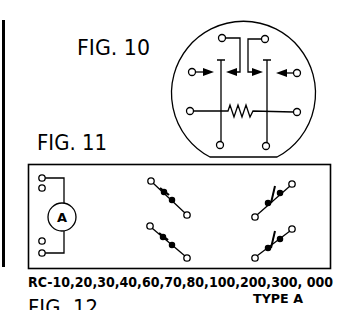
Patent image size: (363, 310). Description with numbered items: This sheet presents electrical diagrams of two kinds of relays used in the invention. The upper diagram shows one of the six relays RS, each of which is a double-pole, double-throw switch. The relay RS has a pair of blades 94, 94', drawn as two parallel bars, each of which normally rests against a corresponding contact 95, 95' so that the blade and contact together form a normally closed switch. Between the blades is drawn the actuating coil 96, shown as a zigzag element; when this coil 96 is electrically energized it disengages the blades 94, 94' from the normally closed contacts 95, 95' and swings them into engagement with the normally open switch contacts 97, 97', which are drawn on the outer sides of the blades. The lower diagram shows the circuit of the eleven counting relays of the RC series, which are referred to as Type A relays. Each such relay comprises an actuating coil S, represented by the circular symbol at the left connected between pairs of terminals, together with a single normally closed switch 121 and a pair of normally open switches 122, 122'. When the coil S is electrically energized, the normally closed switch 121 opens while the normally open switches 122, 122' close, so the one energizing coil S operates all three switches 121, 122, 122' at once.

In FIG. 10, the relay RS is at (161, 86).
In FIG. 10, the blade 94 is at (205, 101).
In FIG. 10, the blade 94' is at (285, 101).
In FIG. 10, the normally closed switch contact 95 is at (207, 45).
In FIG. 10, the normally closed switch contact 95' is at (290, 49).
In FIG. 10, the actuating coil 96 is at (243, 119).
In FIG. 10, the normally open switch contact 97 is at (185, 57).
In FIG. 10, the normally open switch contact 97' is at (309, 61).
In FIG. 11, the actuating coil S is at (48, 217).
In FIG. 11, the normally closed switch 121 is at (166, 191).
In FIG. 11, the normally open switch 122 is at (261, 200).
In FIG. 11, the normally open switch 122' is at (257, 243).